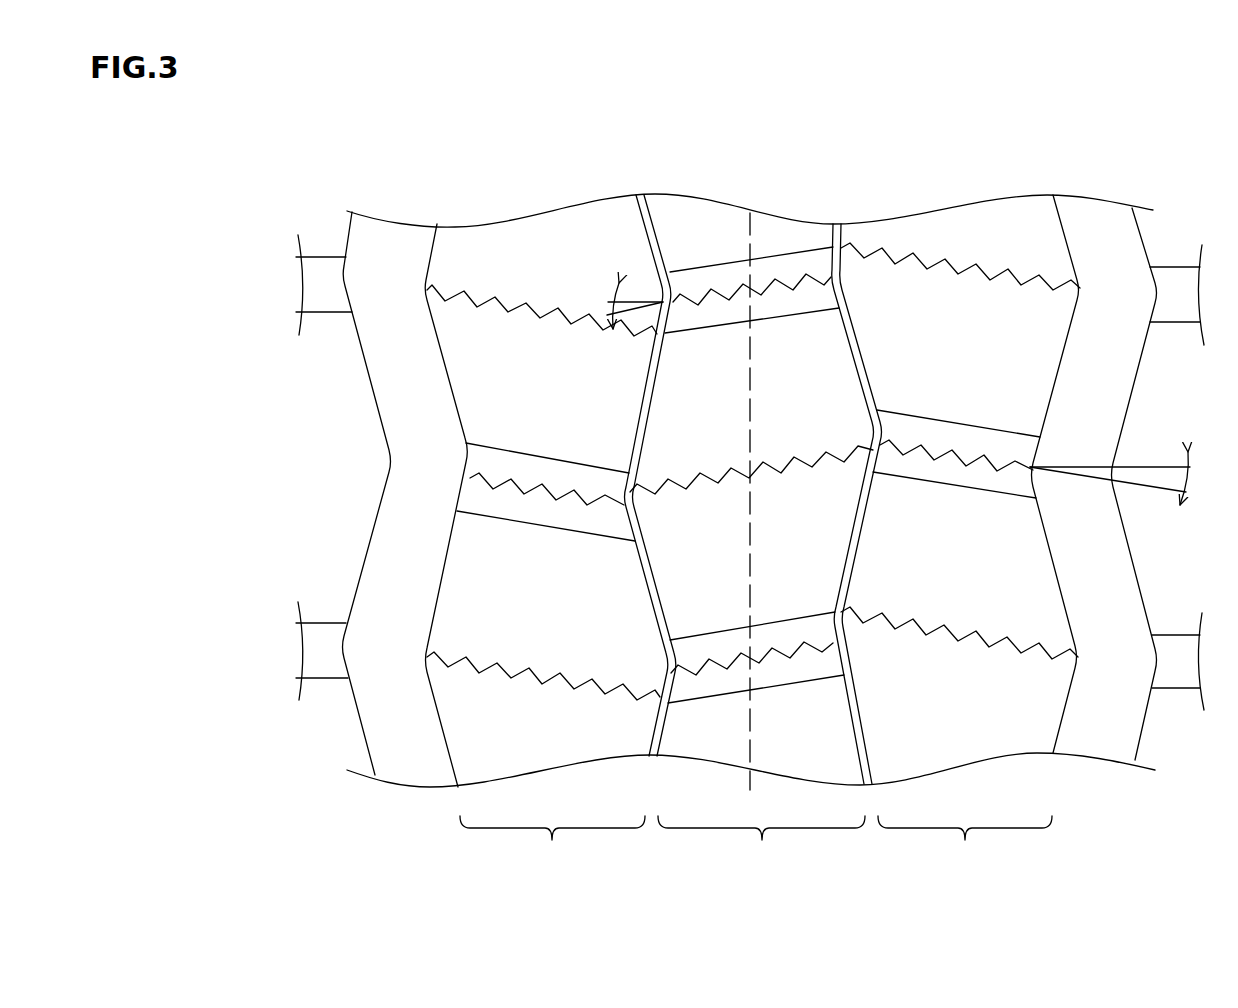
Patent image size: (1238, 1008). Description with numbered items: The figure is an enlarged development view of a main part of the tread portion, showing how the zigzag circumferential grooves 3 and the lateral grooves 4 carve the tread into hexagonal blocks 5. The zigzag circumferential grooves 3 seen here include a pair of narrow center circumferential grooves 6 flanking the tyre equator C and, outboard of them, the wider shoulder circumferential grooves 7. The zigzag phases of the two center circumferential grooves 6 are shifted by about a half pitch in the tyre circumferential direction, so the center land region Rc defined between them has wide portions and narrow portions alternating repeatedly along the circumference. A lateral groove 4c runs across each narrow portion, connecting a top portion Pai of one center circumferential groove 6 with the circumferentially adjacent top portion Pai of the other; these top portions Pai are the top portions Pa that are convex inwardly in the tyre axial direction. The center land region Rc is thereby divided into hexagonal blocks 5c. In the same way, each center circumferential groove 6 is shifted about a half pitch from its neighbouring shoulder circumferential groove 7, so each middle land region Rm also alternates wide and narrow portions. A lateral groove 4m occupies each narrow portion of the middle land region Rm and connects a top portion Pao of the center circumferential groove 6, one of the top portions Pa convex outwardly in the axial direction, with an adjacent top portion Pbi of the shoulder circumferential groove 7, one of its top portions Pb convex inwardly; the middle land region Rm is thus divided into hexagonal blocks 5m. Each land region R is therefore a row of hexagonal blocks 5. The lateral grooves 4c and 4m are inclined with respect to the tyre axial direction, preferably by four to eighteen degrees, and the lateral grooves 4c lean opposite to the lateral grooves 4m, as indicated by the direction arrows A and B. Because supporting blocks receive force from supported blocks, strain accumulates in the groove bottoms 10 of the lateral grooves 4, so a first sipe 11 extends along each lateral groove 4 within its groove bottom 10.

The zigzag circumferential groove 3 is at (750, 442).
The shoulder circumferential groove 7 is at (388, 243).
The center circumferential groove 6 is at (647, 223).
The lateral groove 4 is at (643, 422).
The middle lateral groove 4m is at (467, 468).
The center lateral groove 4c is at (700, 279).
The hexagonal block 5 is at (753, 492).
The center hexagonal block 5c is at (726, 552).
The middle hexagonal block 5m is at (922, 582).
The groove bottom 10 is at (512, 473).
The first sipe 11 is at (548, 478).
The top portion of center circumferential groove Pa is at (741, 391).
The inwardly convex top portion of center circumferential groove Pai is at (658, 298).
The outwardly convex top portion of center circumferential groove Pao is at (616, 514).
The top portion of shoulder circumferential groove Pb is at (496, 547).
The inwardly convex top portion of shoulder circumferential groove Pbi is at (476, 492).
The sipe inclination direction A is at (650, 674).
The groove sipe inclination direction B is at (606, 498).
The tire equator C is at (750, 516).
The land region R is at (756, 844).
The middle land region Rm is at (756, 844).
The center land region Rc is at (761, 844).